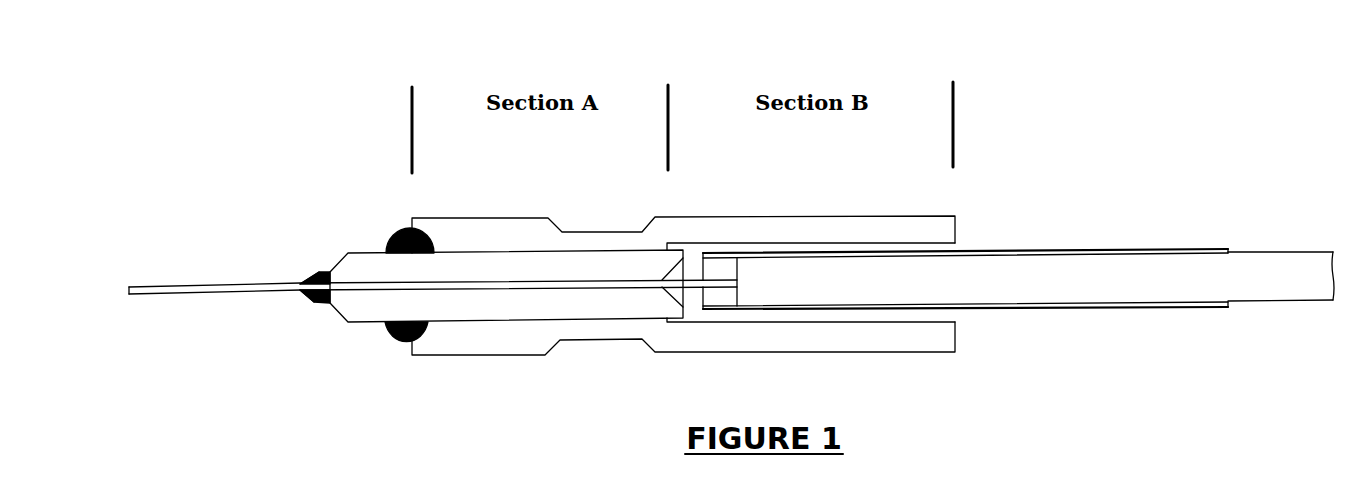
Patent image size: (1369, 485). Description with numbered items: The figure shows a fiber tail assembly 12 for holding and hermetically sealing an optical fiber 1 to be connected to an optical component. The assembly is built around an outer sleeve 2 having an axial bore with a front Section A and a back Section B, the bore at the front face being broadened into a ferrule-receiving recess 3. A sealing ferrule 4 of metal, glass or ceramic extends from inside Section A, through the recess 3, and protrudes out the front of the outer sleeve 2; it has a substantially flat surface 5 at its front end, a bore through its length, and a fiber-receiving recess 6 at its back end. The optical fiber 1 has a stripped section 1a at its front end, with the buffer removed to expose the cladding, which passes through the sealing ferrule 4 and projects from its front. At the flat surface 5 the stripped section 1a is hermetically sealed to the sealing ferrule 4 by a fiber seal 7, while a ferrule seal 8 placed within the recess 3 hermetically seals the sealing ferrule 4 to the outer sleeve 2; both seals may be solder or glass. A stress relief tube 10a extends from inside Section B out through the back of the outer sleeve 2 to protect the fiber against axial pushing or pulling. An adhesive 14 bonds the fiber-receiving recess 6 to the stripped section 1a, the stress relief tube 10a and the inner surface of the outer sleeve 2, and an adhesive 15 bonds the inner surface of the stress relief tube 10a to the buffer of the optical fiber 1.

The optical fiber 1 is at (1258, 262).
The stripped section 1a is at (223, 283).
The outer sleeve 2 is at (535, 338).
The ferrule-receiving recess 3 is at (415, 350).
The sealing ferrule 4 is at (352, 302).
The flat surface 5 is at (330, 270).
The fiber-receiving recess 6 is at (683, 260).
The fiber seal 7 is at (316, 273).
The ferrule seal 8 is at (397, 230).
The stress relief tube 10a is at (1090, 250).
The fiber tail assembly 12 is at (1266, 40).
The adhesive 14 is at (687, 268).
The adhesive 15 is at (1173, 251).